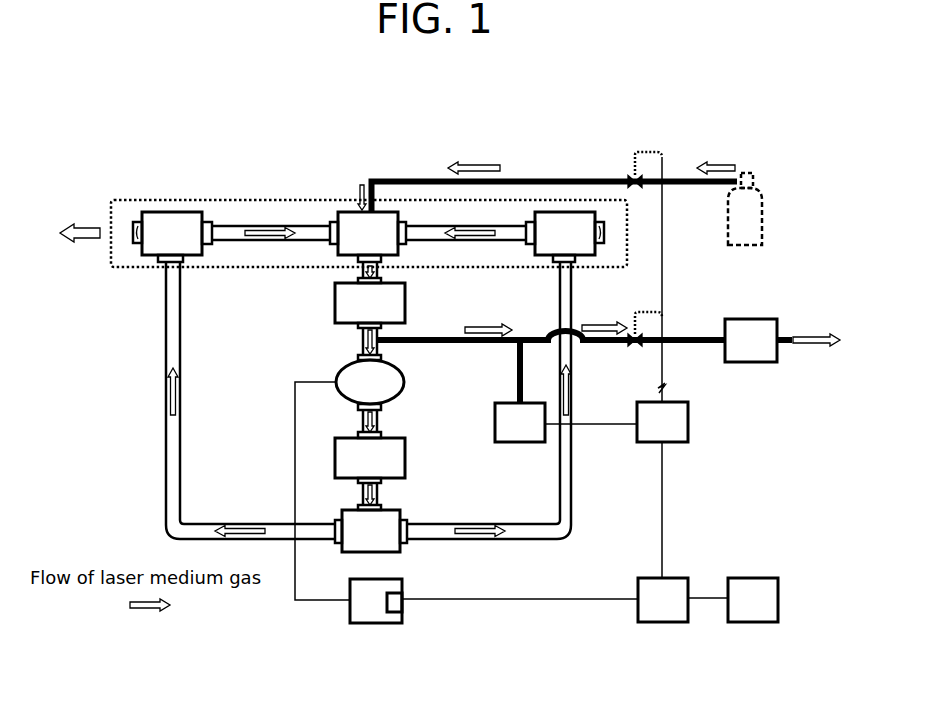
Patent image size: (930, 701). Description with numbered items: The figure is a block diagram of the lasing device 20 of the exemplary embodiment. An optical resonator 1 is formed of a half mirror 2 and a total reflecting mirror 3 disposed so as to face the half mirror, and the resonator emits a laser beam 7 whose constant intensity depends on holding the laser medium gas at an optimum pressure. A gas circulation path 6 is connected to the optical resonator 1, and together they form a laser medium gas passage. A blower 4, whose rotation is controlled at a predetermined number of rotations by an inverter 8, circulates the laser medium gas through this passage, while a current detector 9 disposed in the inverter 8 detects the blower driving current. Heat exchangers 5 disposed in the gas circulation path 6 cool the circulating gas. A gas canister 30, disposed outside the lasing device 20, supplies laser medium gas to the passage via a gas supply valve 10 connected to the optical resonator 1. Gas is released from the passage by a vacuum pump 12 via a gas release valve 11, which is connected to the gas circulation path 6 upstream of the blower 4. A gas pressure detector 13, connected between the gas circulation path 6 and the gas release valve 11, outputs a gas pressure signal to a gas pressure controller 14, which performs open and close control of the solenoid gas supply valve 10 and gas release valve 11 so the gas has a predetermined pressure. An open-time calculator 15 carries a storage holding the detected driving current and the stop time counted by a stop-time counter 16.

The optical resonator 1 is at (208, 198).
The half mirror 2 is at (134, 222).
The total reflecting mirror 3 is at (604, 245).
The blower 4 is at (342, 373).
The heat exchangers 5 is at (335, 294).
The gas circulation path 6 is at (165, 336).
The laser beam 7 is at (84, 244).
The inverter 8 is at (393, 580).
The current detector 9 is at (407, 598).
The gas supply valve 10 is at (630, 177).
The gas release valve 11 is at (632, 348).
The vacuum pump 12 is at (758, 318).
The gas pressure detector 13 is at (510, 444).
The gas pressure controller 14 is at (648, 444).
The open-time calculator 15 is at (676, 577).
The stop-time counter 16 is at (768, 577).
The lasing device 20 is at (846, 176).
The gas canister 30 is at (758, 181).